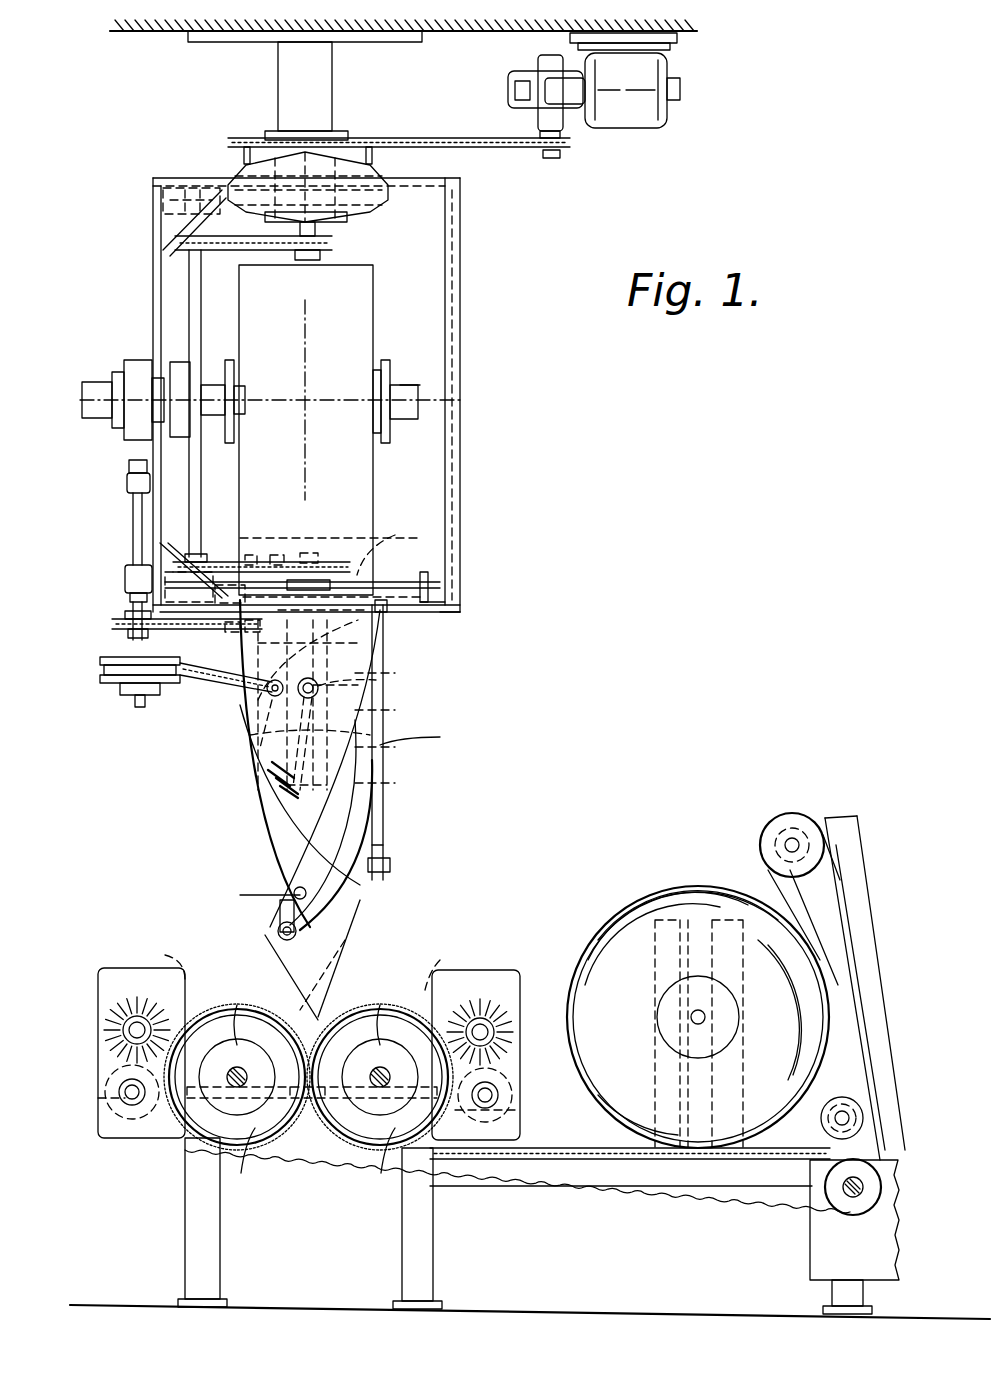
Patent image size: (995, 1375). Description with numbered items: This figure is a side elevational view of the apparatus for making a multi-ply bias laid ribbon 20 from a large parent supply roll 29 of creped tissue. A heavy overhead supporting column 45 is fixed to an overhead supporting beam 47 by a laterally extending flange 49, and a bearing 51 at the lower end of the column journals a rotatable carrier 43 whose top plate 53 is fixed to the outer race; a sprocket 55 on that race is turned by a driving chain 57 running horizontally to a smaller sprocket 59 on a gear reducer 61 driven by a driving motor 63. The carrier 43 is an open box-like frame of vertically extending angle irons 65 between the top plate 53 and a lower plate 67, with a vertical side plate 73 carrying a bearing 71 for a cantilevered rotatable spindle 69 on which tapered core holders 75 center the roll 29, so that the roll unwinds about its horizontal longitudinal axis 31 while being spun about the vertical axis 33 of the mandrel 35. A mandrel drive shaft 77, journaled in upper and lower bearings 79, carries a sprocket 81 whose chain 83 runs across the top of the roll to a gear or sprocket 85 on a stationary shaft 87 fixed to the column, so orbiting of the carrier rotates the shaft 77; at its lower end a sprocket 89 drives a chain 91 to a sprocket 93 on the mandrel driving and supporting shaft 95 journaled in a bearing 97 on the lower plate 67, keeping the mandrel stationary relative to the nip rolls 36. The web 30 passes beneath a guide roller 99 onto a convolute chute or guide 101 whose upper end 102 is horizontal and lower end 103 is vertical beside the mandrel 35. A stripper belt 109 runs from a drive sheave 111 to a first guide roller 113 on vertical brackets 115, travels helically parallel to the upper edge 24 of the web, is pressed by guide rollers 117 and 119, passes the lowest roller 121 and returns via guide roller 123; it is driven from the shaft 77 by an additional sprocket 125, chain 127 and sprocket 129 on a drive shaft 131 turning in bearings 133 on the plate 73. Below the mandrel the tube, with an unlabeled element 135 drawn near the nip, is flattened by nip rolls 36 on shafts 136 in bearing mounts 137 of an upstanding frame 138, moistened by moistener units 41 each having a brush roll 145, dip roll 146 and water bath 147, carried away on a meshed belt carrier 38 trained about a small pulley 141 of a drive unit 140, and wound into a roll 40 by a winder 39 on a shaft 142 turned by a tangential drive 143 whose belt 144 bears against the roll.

The overhead supporting beam 47 is at (118, 40).
The laterally extending flange 49 is at (205, 42).
The overhead supporting column 45 is at (332, 78).
The driving motor 63 is at (650, 125).
The gear reducer 61 is at (524, 88).
The smaller size sprocket 59 is at (560, 156).
The driving chain 57 is at (442, 136).
The sprocket 55 is at (254, 140).
The bearing 51 is at (220, 156).
The stationary shaft 87 is at (347, 222).
The chain 83 is at (260, 240).
The gear or sprocket 85 is at (320, 255).
The top plate 53 is at (430, 190).
The vertically disposed plate 73 is at (155, 298).
The vertically extending angle irons 65 is at (458, 412).
The lower plate 67 is at (460, 612).
The rotatable carrier 43 is at (560, 455).
The upper and lower bearings 79 is at (158, 182).
The sprocket 81 is at (180, 230).
The mandrel drive shaft 77 is at (190, 272).
The supply roll 29 is at (373, 300).
The axis of the mandrel 33 is at (312, 322).
The longitudinal axis 31 is at (318, 405).
The bearing 71 is at (135, 370).
The tapered core holders 75 is at (225, 358).
The rotatable spindle 69 is at (418, 384).
The bearings 133 is at (130, 472).
The drive shaft 131 is at (133, 506).
The additional sprocket 125 is at (127, 572).
The sprocket 89 is at (175, 558).
The chain 91 is at (232, 552).
The sprocket 93 is at (322, 552).
The mandrel driving and supporting shaft 95 is at (383, 537).
The web 30 is at (368, 555).
The guide roller 99 is at (402, 588).
The chain 127 is at (112, 622).
The sprocket 129 is at (127, 634).
The drive sheave 111 is at (110, 685).
The upper end of the chute 102 is at (250, 652).
The bearing 97 is at (345, 640).
The first guide roller 113 is at (235, 712).
The guide roller 123 is at (393, 692).
The vertical brackets 115 is at (225, 893).
The guide roller 117 is at (258, 787).
The mandrel 35 is at (383, 780).
The upper edge of the web 24 is at (370, 822).
The guide roller 119 is at (390, 866).
The stripper belt 109 is at (278, 876).
The lowest support and guide roller 121 is at (278, 928).
The lower end of the chute 103 is at (360, 935).
The guide 135 is at (352, 975).
The bearing mounts 137 is at (307, 963).
The horizontally disposed shafts 136 is at (235, 1045).
The nip rolls 36 is at (311, 1166).
The moistener units 41 is at (94, 962).
The brush roll 145 is at (110, 996).
The dip roll 146 is at (106, 1072).
The bath 147 is at (100, 1102).
The upstanding frame 138 is at (195, 1228).
The meshed belt carrier 38 is at (640, 1190).
The small pulley 141 is at (845, 1210).
The drive unit 140 is at (825, 1255).
The roll 40 is at (710, 883).
The winder 39 is at (640, 883).
The shaft 142 is at (703, 1018).
The ribbon 20 is at (640, 1065).
The belt 144 is at (767, 848).
The tangential drive 143 is at (870, 800).
The convolute shaped chute or guide 101 is at (387, 610).